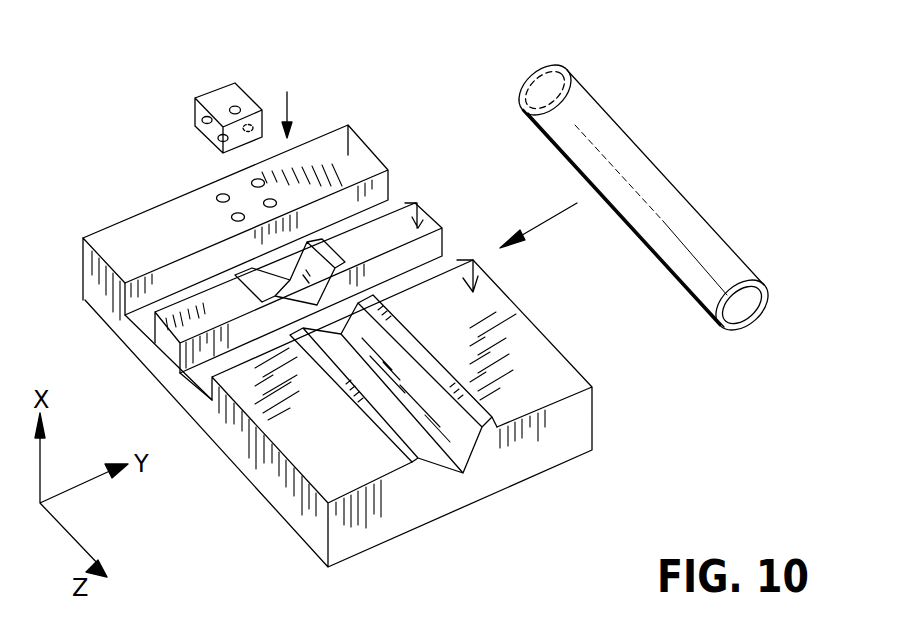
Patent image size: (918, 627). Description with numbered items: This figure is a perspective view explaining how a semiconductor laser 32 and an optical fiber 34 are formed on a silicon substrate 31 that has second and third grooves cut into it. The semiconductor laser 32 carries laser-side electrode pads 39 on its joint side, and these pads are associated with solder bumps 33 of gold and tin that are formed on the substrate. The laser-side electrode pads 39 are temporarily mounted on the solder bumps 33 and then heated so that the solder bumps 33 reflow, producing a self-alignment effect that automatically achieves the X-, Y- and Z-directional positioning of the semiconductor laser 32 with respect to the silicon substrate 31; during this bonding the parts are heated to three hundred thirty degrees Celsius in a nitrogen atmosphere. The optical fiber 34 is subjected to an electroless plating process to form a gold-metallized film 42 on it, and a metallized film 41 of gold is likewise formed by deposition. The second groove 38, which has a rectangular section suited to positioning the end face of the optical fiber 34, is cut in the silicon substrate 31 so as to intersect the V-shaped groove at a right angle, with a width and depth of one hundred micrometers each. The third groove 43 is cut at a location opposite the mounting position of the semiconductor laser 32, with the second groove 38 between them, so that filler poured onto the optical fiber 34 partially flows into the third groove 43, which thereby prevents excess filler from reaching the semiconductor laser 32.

The silicon substrate 31 is at (580, 421).
The semiconductor laser 32 is at (217, 98).
The solder bumps 33 is at (223, 193).
The optical fiber 34 is at (745, 305).
The second groove 38 is at (150, 323).
The laser-side electrode pads 39 is at (242, 100).
The metallized film 41 is at (493, 433).
The gold-metallized film 42 is at (765, 288).
The third groove 43 is at (197, 382).